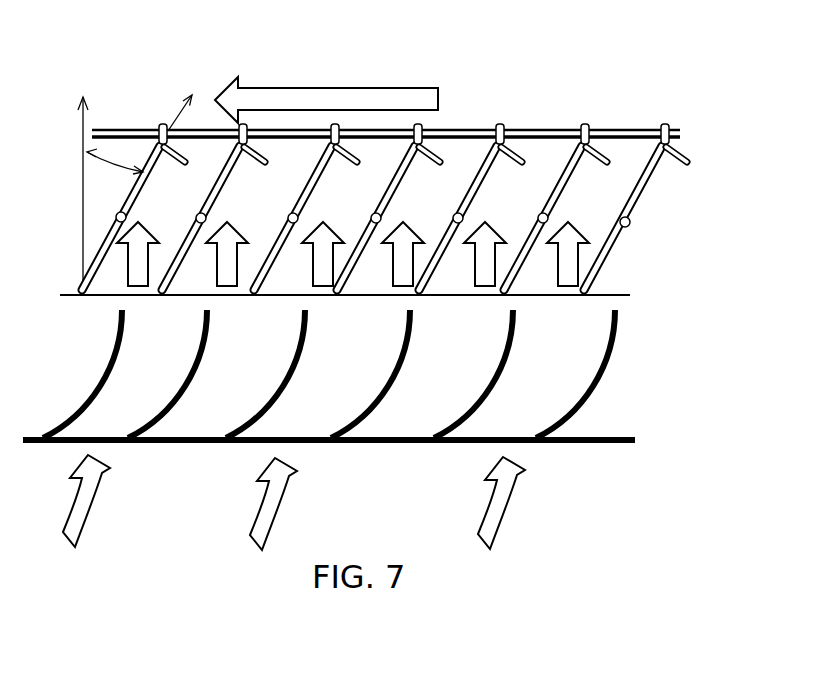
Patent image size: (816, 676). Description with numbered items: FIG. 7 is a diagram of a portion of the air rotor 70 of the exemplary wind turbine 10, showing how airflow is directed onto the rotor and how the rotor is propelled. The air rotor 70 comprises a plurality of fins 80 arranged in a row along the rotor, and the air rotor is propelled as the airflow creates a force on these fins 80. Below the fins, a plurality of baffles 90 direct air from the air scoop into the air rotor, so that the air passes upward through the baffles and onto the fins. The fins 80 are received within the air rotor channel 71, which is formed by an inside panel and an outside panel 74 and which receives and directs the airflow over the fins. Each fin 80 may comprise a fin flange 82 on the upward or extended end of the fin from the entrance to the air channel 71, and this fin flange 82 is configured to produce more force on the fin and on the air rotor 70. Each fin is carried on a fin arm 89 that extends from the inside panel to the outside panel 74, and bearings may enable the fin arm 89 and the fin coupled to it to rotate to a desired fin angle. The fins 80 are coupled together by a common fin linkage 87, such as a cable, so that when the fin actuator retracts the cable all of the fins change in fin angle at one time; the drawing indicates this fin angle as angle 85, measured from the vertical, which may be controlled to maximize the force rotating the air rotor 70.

The wind turbine 10 is at (175, 88).
The air rotor 70 is at (465, 160).
The air rotor channel 71 is at (543, 168).
The outside panel 74 is at (637, 180).
The fin 80 is at (572, 168).
The fin flange 82 is at (673, 150).
The tilt angle 85 is at (110, 160).
The fin linkage 87 is at (518, 128).
The fin arm 89 is at (116, 216).
The baffle 90 is at (596, 392).